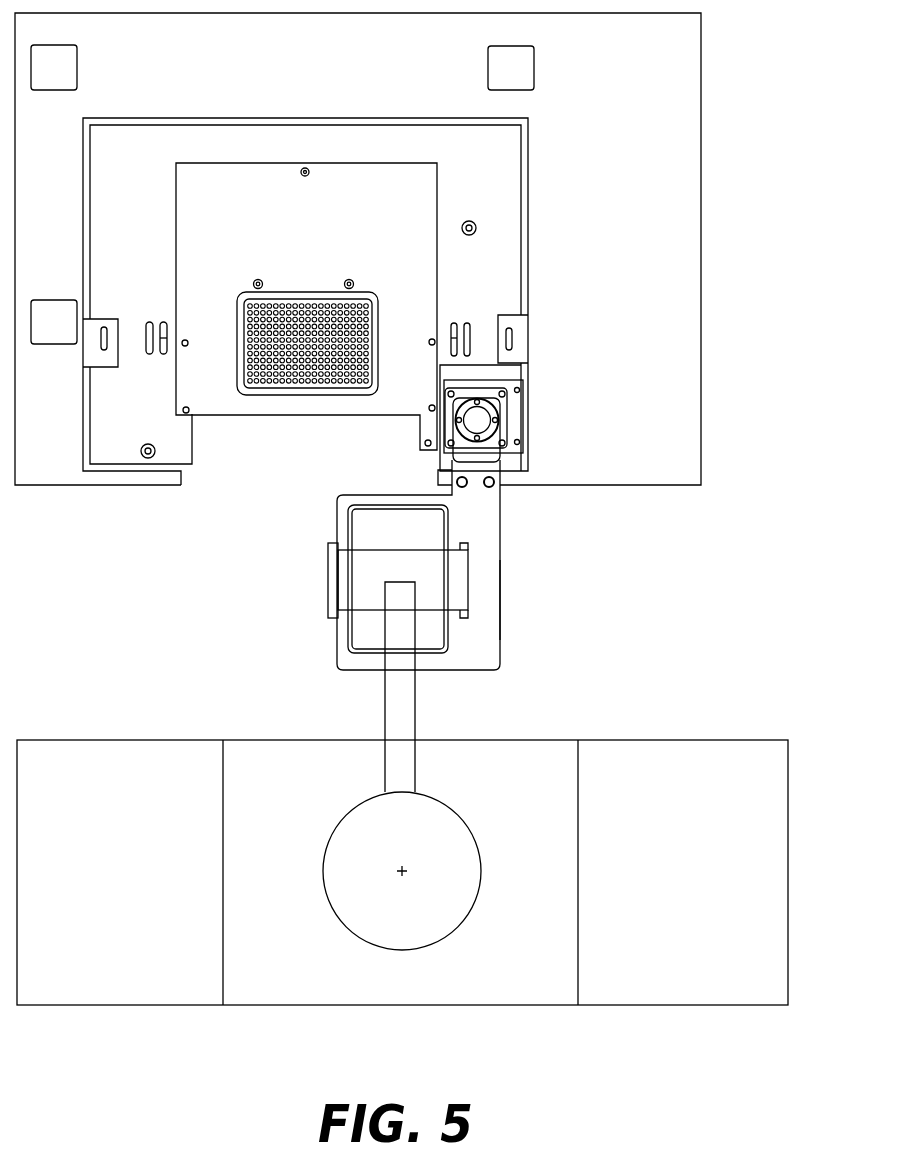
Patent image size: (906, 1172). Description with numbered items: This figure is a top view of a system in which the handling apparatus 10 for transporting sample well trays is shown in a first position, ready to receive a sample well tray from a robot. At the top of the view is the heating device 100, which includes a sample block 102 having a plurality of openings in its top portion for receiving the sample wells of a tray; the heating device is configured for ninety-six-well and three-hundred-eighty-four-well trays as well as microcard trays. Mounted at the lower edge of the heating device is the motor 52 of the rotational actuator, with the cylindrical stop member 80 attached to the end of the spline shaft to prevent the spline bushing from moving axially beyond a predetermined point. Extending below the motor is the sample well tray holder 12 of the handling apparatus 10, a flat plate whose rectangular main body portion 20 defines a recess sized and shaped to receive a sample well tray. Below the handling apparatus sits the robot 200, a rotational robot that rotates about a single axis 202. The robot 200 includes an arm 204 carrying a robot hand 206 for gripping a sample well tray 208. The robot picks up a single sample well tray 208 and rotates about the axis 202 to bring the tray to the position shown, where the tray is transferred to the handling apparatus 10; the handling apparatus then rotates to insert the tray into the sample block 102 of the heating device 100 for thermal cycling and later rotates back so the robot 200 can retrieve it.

The heating device 100 is at (414, 249).
The sample block 102 is at (293, 403).
The motor 52 is at (505, 397).
The cylindrical stop member 80 is at (477, 420).
The handling apparatus 10 is at (445, 565).
The sample well tray holder 12 is at (508, 596).
The main body portion 20 is at (488, 528).
The robot hand 206 is at (440, 592).
The sample well tray 208 is at (363, 630).
The arm 204 is at (408, 718).
The axis 202 is at (402, 871).
The robot 200 is at (622, 730).